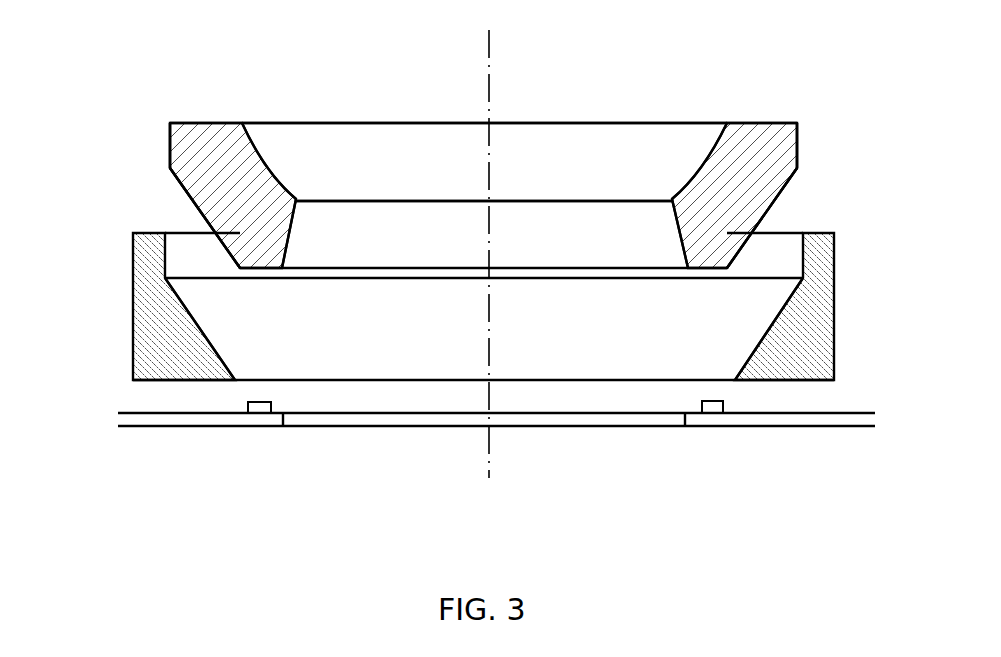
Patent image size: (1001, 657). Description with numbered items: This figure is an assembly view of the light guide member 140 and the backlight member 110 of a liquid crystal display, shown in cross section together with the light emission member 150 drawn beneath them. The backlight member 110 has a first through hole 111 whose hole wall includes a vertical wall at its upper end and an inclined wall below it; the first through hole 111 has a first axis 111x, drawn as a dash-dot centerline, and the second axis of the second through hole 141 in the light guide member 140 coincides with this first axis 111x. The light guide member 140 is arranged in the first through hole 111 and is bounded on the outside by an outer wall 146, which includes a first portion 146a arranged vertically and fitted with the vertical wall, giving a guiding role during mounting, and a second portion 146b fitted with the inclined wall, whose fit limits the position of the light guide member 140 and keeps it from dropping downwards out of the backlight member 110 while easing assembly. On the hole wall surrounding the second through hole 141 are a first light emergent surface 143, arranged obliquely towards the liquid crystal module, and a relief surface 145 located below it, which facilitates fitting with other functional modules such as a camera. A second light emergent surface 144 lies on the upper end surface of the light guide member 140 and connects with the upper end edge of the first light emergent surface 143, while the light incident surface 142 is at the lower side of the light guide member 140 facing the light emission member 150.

The backlight member 110 is at (820, 318).
The first through hole 111 is at (210, 317).
The first axis 111x is at (490, 62).
The light guide member 140 is at (766, 171).
The second through hole 141 is at (432, 150).
The light incident surface 142 is at (262, 270).
The first light emergent surface 143 is at (263, 163).
The second light emergent surface 144 is at (216, 123).
The relief surface 145 is at (288, 238).
The outer wall 146 is at (83, 112).
The first portion 146a is at (170, 137).
The second portion 146b is at (200, 200).
The light emission member 150 is at (250, 408).